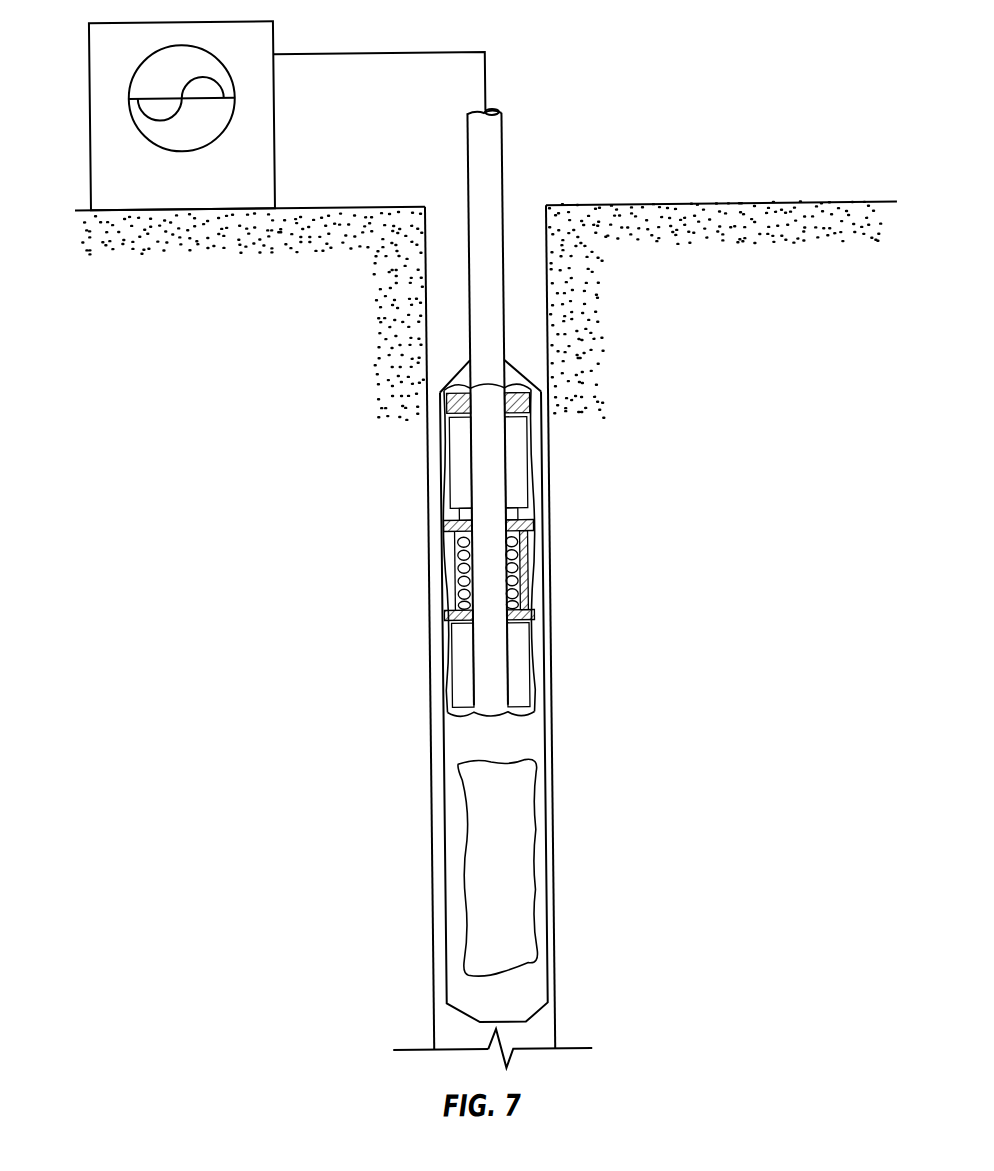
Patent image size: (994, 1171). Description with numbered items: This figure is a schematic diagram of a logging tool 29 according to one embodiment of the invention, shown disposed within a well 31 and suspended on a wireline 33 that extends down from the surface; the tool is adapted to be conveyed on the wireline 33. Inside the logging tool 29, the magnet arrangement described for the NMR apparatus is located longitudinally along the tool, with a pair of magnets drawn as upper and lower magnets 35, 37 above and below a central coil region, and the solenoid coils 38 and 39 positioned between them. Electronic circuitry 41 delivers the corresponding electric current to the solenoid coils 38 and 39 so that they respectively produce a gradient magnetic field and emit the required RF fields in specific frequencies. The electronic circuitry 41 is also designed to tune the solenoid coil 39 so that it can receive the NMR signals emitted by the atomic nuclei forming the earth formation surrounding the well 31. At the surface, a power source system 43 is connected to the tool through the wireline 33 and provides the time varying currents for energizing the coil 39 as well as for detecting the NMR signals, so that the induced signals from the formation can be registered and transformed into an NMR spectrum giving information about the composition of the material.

The logging tool 29 is at (458, 747).
The well 31 is at (447, 202).
The wireline 33 is at (504, 150).
The upper magnet 35 is at (455, 474).
The lower magnet 37 is at (456, 674).
The solenoid coil 38 is at (525, 601).
The solenoid coil 39 is at (514, 556).
The electronic circuitry 41 is at (439, 403).
The power source system 43 is at (110, 118).